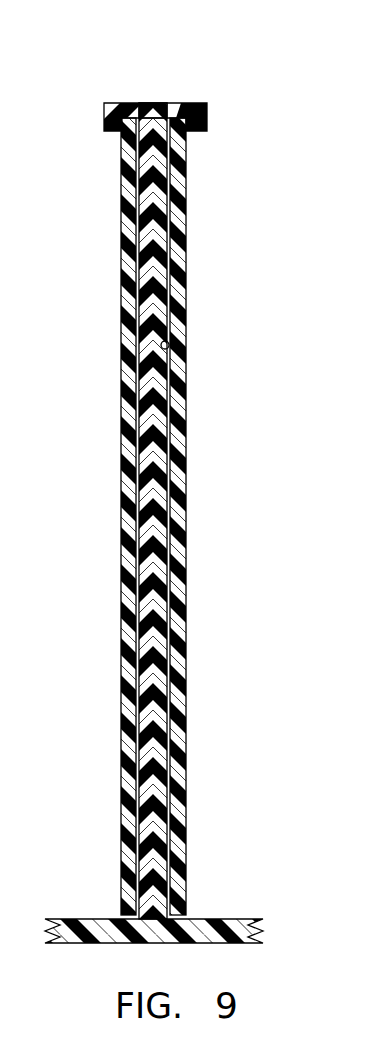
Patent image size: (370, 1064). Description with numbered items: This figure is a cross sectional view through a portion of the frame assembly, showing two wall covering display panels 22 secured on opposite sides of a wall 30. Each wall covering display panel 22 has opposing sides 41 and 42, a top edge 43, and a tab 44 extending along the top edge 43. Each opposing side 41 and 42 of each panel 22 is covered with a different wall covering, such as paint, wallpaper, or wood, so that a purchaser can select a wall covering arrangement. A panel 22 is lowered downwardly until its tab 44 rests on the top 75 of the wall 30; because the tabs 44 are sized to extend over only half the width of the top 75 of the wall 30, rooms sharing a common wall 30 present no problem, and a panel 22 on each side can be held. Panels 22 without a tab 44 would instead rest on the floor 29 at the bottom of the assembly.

The wall covering display panel 22 is at (120, 612).
The floor 29 is at (218, 920).
The wall 30 is at (157, 507).
The side 41 is at (187, 252).
The side 42 is at (169, 346).
The top edge 43 is at (173, 118).
The tab 44 is at (194, 105).
The top of wall 75 is at (150, 118).